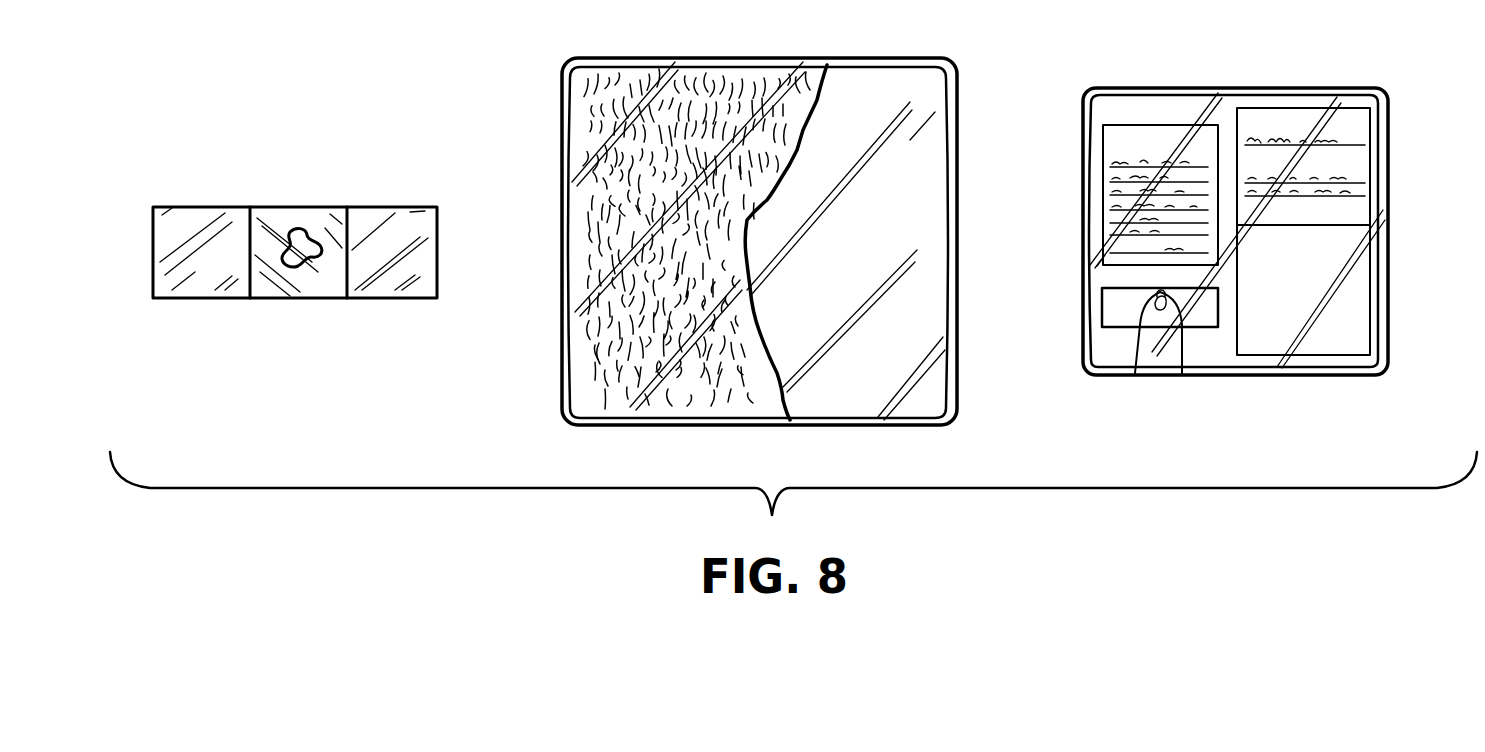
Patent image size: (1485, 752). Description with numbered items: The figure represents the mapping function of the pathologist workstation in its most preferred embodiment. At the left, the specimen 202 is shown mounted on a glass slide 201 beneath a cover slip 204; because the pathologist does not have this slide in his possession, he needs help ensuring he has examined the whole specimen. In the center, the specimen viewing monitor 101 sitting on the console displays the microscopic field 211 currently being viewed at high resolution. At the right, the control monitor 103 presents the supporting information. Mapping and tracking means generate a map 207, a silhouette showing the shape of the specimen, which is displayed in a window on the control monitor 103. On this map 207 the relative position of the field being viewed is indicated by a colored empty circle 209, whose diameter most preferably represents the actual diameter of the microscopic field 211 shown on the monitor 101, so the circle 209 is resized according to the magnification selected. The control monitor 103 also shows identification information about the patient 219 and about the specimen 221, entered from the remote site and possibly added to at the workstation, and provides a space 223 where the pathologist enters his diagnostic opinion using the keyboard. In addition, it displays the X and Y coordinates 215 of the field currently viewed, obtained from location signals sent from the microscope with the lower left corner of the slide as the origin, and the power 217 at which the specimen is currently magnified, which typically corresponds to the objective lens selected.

The specimen viewing monitor 101 is at (942, 60).
The control monitor 103 is at (1305, 88).
The glass slide 201 is at (195, 217).
The specimen 202 is at (312, 228).
The cover slip 204 is at (265, 290).
The map 207 is at (1135, 373).
The colored empty circle 209 is at (1182, 375).
The microscopic field 211 is at (610, 322).
The X and Y coordinates 215 is at (1318, 273).
The power 217 is at (1315, 342).
The identification information about the patient 219 is at (1368, 128).
The identification information about the specimen 221 is at (1357, 190).
The space for diagnostic opinion 223 is at (1130, 208).